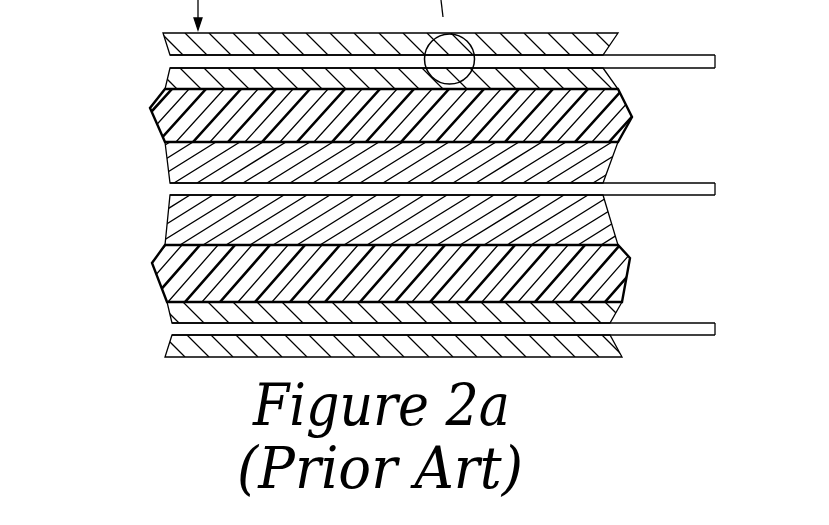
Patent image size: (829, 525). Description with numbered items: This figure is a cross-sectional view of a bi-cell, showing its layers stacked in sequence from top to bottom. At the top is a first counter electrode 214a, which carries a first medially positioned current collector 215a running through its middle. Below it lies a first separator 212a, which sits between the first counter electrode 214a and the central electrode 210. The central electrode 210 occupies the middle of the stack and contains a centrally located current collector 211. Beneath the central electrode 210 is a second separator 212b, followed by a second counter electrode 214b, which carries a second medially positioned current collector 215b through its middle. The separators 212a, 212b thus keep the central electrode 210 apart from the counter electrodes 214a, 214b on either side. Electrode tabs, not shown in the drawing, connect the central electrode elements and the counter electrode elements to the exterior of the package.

The central electrode 210 is at (184, 211).
The centrally located current collector 211 is at (668, 187).
The first separator 212a is at (160, 124).
The second separator 212b is at (167, 290).
The first counter electrode 214a is at (176, 48).
The second counter electrode 214b is at (174, 320).
The first medially positioned current collector 215a is at (700, 60).
The second medially positioned current collector 215b is at (700, 328).